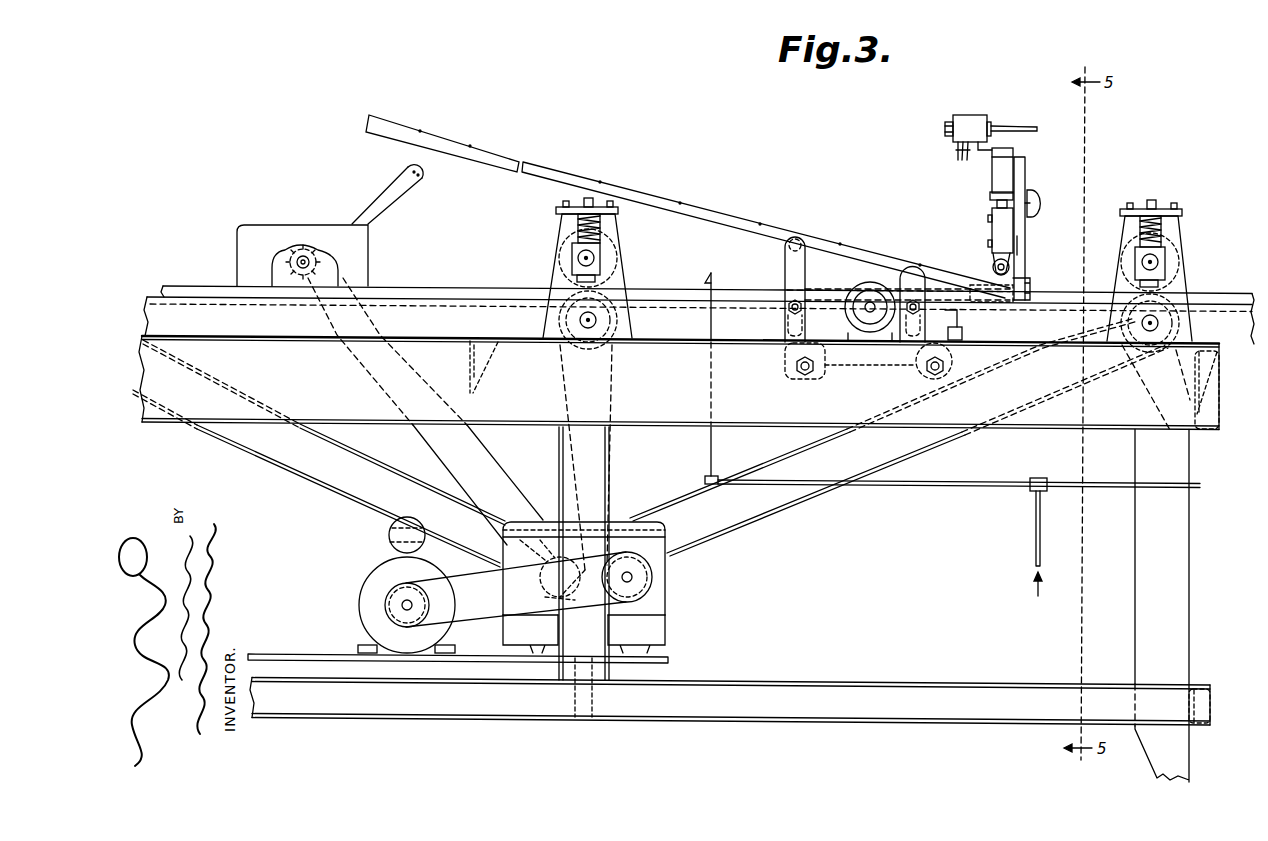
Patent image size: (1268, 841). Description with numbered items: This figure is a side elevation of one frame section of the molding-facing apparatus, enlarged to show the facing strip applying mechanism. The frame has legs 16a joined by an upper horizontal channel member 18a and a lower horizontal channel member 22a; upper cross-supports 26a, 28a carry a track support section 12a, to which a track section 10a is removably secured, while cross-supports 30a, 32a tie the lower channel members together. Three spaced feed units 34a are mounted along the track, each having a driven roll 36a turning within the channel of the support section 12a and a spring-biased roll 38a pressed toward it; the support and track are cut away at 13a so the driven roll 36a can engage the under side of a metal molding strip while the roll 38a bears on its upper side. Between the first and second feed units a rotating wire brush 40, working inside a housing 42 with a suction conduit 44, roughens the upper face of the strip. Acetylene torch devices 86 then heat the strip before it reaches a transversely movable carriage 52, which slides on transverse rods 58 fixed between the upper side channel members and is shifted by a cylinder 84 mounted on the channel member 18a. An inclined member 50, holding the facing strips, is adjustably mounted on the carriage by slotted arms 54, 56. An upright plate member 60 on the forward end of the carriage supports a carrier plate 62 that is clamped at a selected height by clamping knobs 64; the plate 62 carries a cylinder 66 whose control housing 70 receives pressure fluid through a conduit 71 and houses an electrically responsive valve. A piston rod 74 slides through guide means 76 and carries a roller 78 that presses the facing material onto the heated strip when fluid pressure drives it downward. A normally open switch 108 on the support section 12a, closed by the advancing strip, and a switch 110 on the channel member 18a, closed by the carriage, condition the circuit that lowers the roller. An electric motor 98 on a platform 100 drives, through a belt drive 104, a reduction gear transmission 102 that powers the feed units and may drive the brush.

The track section 10a is at (392, 292).
The track support section 12a is at (442, 315).
The cut-away 13a is at (632, 267).
The legs 16a is at (1143, 549).
The upper horizontal channel member 18a is at (679, 383).
The lower horizontal channel member 22a is at (937, 722).
The cross-support 26a is at (1221, 382).
The cross-support 28a is at (483, 373).
The cross-support 30a is at (1216, 709).
The cross-support 32a is at (593, 702).
The feed unit 34a is at (552, 243).
The driven roll 36a is at (617, 317).
The spring-biased roll 38a is at (607, 238).
The rotating wire brush 40 is at (318, 248).
The housing 42 is at (245, 257).
The suction conduit 44 is at (403, 191).
The inclined member 50 is at (688, 201).
The carriage 52 is at (822, 290).
The slotted arm 54 is at (790, 262).
The slotted arm 56 is at (917, 273).
The transverse rods 58 is at (928, 372).
The upright plate member 60 is at (1025, 232).
The carrier plate 62 is at (1017, 243).
The clamping knob 64 is at (1040, 203).
The cylinder 66 is at (992, 175).
The control housing 70 is at (970, 122).
The conduit 71 is at (1013, 127).
The piston rod 74 is at (997, 202).
The guide means 76 is at (997, 233).
The roller 78 is at (993, 268).
The cylinder 84 is at (853, 307).
The acetylene torch device 86 is at (710, 285).
The electric motor 98 is at (368, 580).
The platform 100 is at (297, 653).
The reduction gear transmission 102 is at (665, 605).
The belt drive 104 is at (483, 620).
The switch 108 is at (1000, 307).
The switch 110 is at (963, 337).